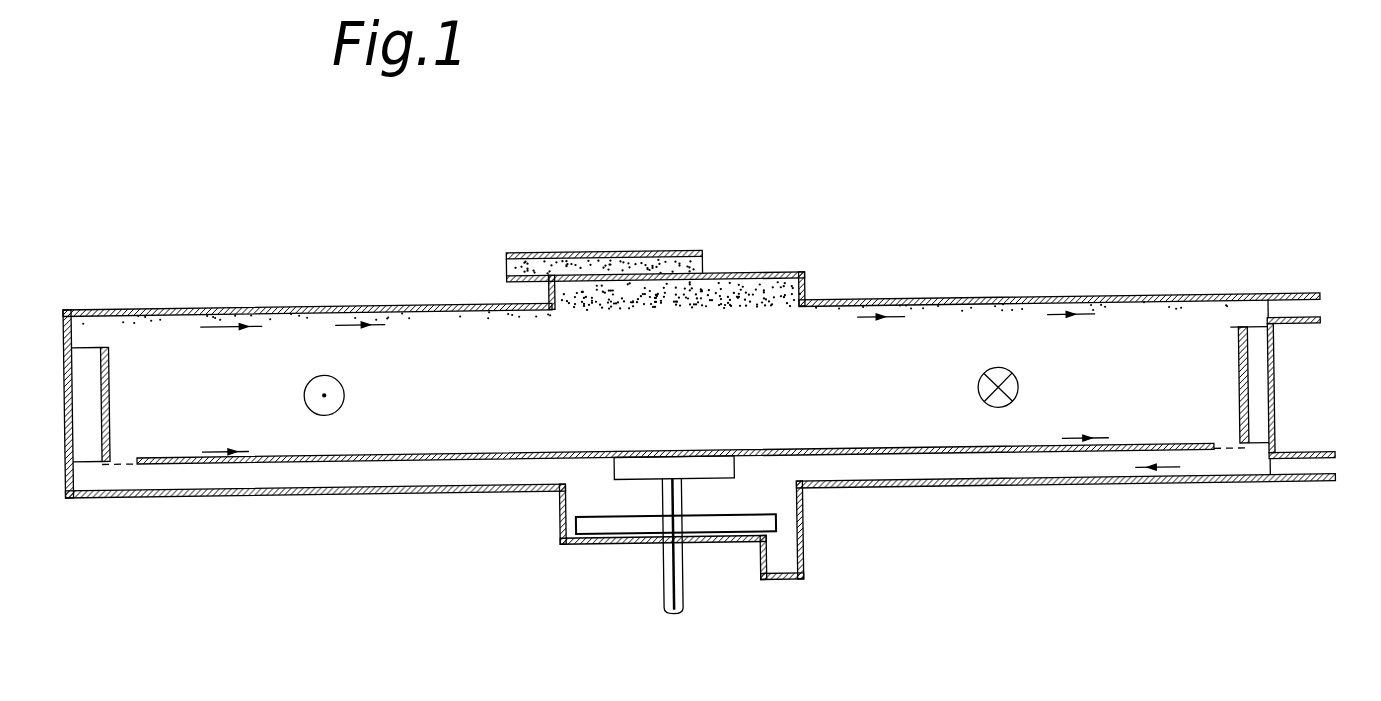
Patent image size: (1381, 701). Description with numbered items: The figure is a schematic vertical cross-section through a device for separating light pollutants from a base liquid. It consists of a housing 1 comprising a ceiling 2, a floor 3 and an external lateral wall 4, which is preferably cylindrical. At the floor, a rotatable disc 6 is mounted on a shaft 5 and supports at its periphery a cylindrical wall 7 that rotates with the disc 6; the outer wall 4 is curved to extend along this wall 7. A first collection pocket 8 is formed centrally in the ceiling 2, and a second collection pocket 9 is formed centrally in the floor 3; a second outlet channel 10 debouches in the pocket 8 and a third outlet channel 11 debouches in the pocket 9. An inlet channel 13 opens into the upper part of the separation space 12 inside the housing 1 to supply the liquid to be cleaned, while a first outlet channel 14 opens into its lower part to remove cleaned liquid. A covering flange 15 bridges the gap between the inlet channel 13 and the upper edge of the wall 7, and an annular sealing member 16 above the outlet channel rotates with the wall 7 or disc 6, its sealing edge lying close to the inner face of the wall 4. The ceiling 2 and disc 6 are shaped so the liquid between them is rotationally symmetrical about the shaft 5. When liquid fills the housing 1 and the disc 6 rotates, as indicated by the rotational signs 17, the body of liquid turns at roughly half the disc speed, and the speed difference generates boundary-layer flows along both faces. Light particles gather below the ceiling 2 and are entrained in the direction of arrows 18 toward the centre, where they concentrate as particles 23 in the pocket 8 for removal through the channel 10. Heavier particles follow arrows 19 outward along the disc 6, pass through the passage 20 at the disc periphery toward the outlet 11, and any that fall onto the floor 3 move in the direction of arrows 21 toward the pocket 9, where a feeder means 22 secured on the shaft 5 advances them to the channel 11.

The housing 1 is at (883, 310).
The ceiling 2 is at (1122, 314).
The floor 3 is at (1103, 492).
The external lateral wall 4 is at (1273, 385).
The shaft 5 is at (660, 592).
The rotatable disc 6 is at (512, 458).
The cylindrical wall 7 is at (108, 360).
The first collection pocket 8 is at (697, 302).
The second collection pocket 9 is at (555, 538).
The second outlet channel 10 is at (507, 274).
The third outlet channel 11 is at (778, 591).
The separation space 12 is at (776, 387).
The inlet channel 13 is at (1318, 325).
The first outlet channel 14 is at (1330, 490).
The covering flange 15 is at (1250, 344).
The annular sealing member 16 is at (1268, 457).
The rotational signs 17 is at (323, 421).
The arrows 18 is at (895, 323).
The arrows 19 is at (1068, 454).
The passage 20 is at (1230, 459).
The arrows 21 is at (1165, 483).
The feeder means 22 is at (720, 532).
The particles 23 is at (645, 310).